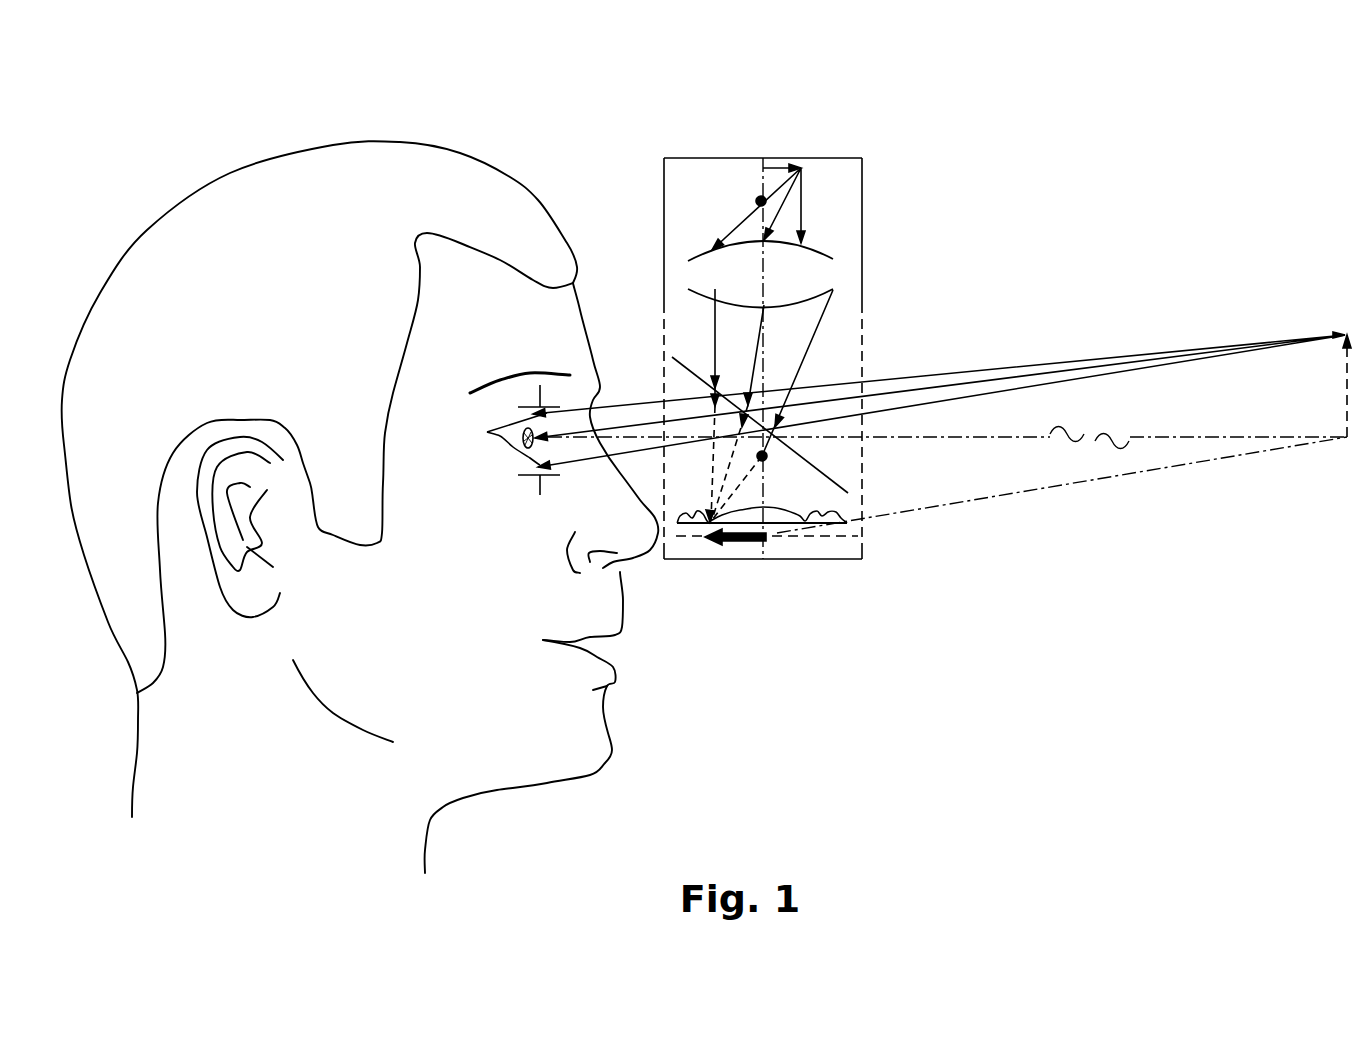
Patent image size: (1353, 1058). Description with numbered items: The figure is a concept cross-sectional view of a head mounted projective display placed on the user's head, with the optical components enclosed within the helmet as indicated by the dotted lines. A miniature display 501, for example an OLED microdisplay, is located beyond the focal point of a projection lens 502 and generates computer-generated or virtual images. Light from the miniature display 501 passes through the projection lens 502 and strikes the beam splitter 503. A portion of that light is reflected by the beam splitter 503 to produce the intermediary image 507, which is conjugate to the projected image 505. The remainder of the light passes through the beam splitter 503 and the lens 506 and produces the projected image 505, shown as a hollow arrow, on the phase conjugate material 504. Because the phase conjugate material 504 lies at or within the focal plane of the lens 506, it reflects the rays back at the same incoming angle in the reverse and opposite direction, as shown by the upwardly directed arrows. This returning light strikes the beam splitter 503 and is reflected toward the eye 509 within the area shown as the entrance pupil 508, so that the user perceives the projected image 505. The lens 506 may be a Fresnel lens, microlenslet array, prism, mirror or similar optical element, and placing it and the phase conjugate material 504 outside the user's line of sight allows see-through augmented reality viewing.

The miniature display 501 is at (770, 158).
The projection lens 502 is at (832, 275).
The beam splitter 503 is at (830, 475).
The phase conjugate material 504 is at (842, 537).
The projected image 505 is at (742, 539).
The lens 506 is at (830, 512).
The intermediary image 507 is at (1345, 397).
The entrance pupil 508 is at (540, 454).
The eye 509 is at (510, 443).